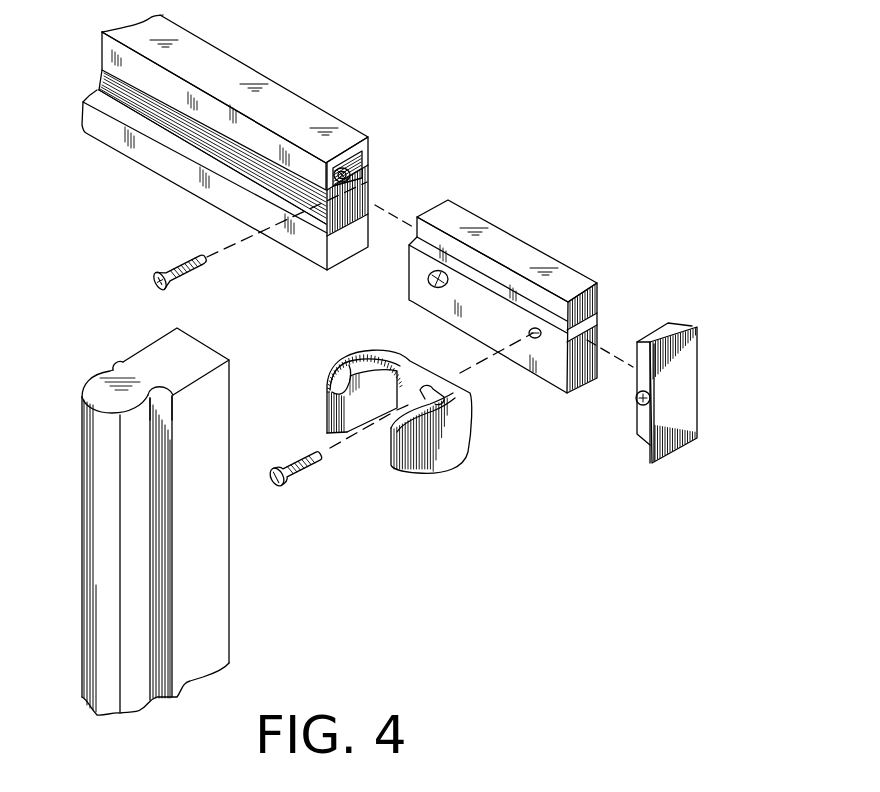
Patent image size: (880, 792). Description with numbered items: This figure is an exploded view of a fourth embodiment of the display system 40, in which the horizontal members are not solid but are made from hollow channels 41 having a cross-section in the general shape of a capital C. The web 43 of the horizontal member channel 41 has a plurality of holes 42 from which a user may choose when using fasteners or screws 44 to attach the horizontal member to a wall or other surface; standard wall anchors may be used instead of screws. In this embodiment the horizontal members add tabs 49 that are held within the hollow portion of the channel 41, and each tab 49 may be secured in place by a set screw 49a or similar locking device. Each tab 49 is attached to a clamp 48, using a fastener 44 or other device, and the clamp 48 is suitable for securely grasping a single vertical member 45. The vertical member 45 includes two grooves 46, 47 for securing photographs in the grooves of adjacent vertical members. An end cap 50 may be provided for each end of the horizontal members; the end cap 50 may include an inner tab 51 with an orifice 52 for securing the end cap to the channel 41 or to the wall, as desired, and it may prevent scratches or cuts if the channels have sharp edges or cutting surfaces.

The display system 40 is at (518, 117).
The hollow channel 41 is at (303, 107).
The holes 42 is at (350, 186).
The web 43 is at (347, 233).
The screw 44 is at (182, 263).
The vertical member 45 is at (195, 355).
The groove 46 is at (112, 372).
The groove 47 is at (170, 412).
The clamp 48 is at (450, 460).
The tab 49 is at (533, 260).
The set screw 49a is at (430, 274).
The end cap 50 is at (690, 387).
The inner tab 51 is at (657, 337).
The orifice 52 is at (643, 407).